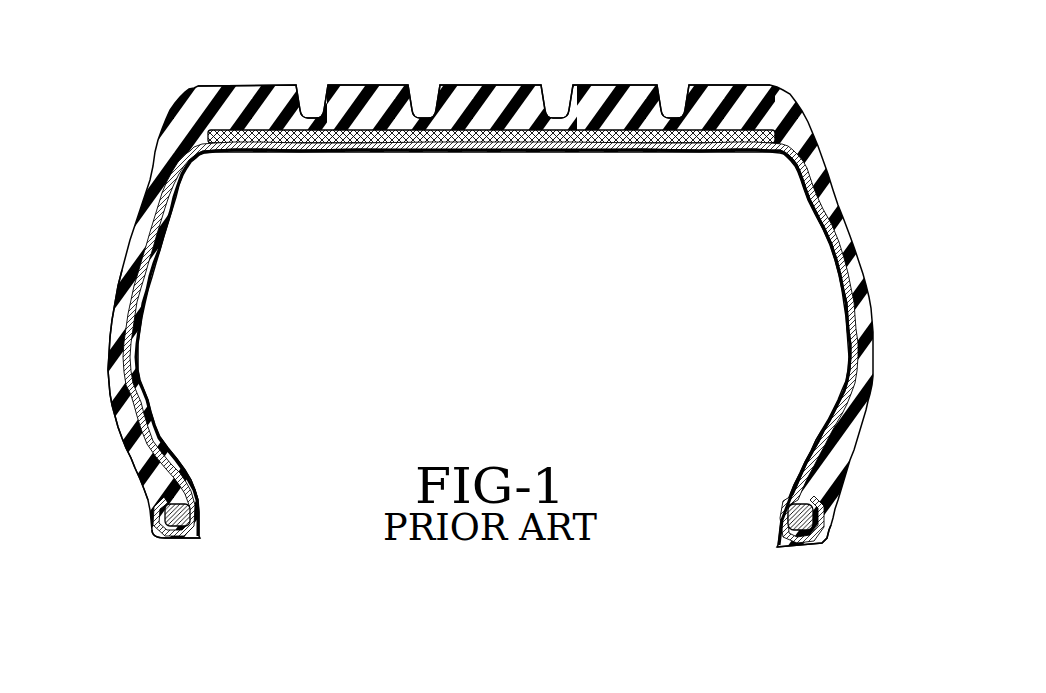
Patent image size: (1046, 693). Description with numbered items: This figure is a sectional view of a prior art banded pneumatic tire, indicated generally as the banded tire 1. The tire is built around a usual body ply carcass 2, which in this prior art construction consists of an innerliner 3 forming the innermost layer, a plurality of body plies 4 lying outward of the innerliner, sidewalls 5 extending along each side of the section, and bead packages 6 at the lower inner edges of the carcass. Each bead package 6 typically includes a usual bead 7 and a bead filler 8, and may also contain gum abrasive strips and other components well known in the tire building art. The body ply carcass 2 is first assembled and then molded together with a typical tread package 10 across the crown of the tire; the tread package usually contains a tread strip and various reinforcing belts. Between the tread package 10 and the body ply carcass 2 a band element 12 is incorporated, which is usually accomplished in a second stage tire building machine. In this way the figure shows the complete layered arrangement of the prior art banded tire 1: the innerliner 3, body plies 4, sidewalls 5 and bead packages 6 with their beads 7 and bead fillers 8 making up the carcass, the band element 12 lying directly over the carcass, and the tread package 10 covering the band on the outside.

The banded tire 1 is at (642, 68).
The body ply carcass 2 is at (112, 440).
The innerliner 3 is at (167, 428).
The body plies 4 is at (120, 397).
The sidewalls 5 is at (106, 366).
The bead packages 6 is at (178, 536).
The bead 7 is at (185, 513).
The bead filler 8 is at (168, 464).
The tread package 10 is at (357, 92).
The band element 12 is at (485, 143).